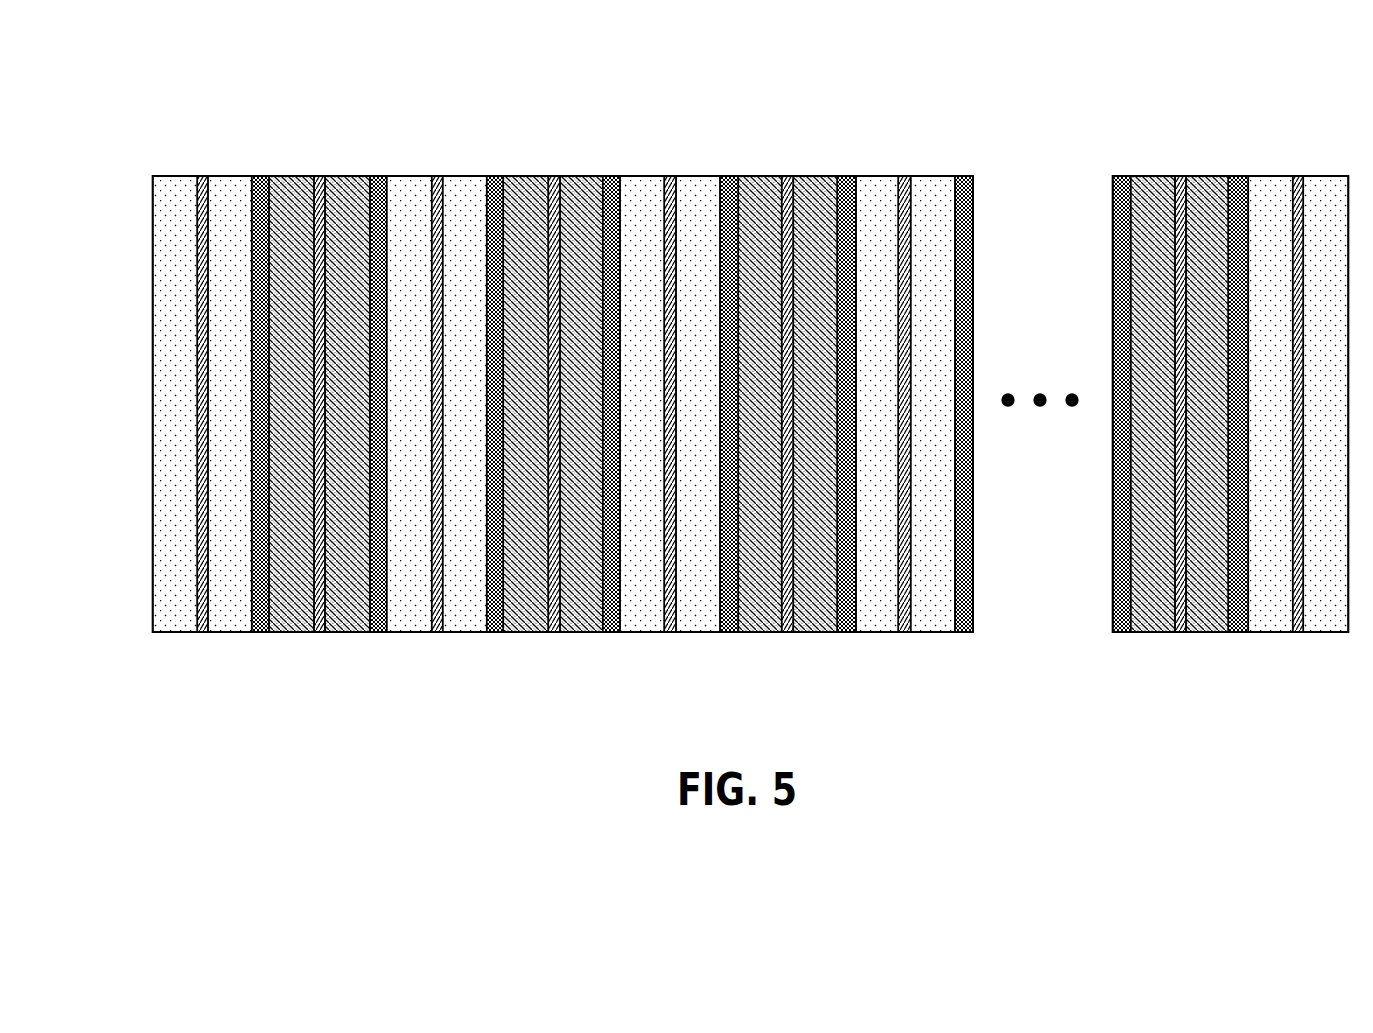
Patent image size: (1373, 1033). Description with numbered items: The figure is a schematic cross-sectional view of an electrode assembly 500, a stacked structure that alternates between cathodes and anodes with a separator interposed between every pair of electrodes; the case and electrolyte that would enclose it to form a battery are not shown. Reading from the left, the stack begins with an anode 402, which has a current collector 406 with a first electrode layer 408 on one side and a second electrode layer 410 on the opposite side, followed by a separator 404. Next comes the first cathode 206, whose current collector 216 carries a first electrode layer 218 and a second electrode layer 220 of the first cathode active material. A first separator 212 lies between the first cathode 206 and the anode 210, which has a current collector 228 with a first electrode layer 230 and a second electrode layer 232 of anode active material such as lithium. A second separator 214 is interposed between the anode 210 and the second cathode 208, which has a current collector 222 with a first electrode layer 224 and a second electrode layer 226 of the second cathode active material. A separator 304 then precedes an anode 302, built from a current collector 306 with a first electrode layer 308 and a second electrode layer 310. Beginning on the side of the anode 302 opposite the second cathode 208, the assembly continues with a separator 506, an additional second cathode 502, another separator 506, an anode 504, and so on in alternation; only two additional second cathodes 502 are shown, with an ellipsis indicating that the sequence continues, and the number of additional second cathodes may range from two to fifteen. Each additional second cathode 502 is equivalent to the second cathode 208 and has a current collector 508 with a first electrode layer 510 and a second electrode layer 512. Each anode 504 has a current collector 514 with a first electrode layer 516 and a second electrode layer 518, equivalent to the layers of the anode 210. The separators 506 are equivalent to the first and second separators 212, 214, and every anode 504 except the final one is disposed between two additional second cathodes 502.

The electrode assembly 500 is at (204, 35).
The anode 402 is at (252, 173).
The first electrode layer 408 is at (175, 633).
The current collector 406 is at (203, 633).
The second electrode layer 410 is at (230, 633).
The separator 404 is at (258, 633).
The first cathode 206 is at (370, 173).
The first electrode layer 218 is at (292, 633).
The current collector 216 is at (320, 633).
The second electrode layer 220 is at (348, 633).
The first separator 212 is at (376, 633).
The anode 210 is at (487, 173).
The first electrode layer 230 is at (409, 633).
The current collector 228 is at (437, 633).
The second electrode layer 232 is at (465, 633).
The second separator 214 is at (493, 633).
The second cathode 208 is at (603, 173).
The first electrode layer 224 is at (526, 633).
The current collector 222 is at (554, 633).
The second electrode layer 226 is at (581, 633).
The separator 304 is at (609, 633).
The anode 302 is at (720, 173).
The first electrode layer 308 is at (642, 633).
The current collector 306 is at (670, 633).
The second electrode layer 310 is at (698, 633).
The separator 506 is at (726, 633).
The additional second cathode 502 is at (837, 173).
The first electrode layer 510 is at (760, 633).
The current collector 508 is at (788, 633).
The second electrode layer 512 is at (815, 633).
The anode 504 is at (955, 173).
The first electrode layer 516 is at (877, 633).
The current collector 514 is at (904, 633).
The second electrode layer 518 is at (933, 633).